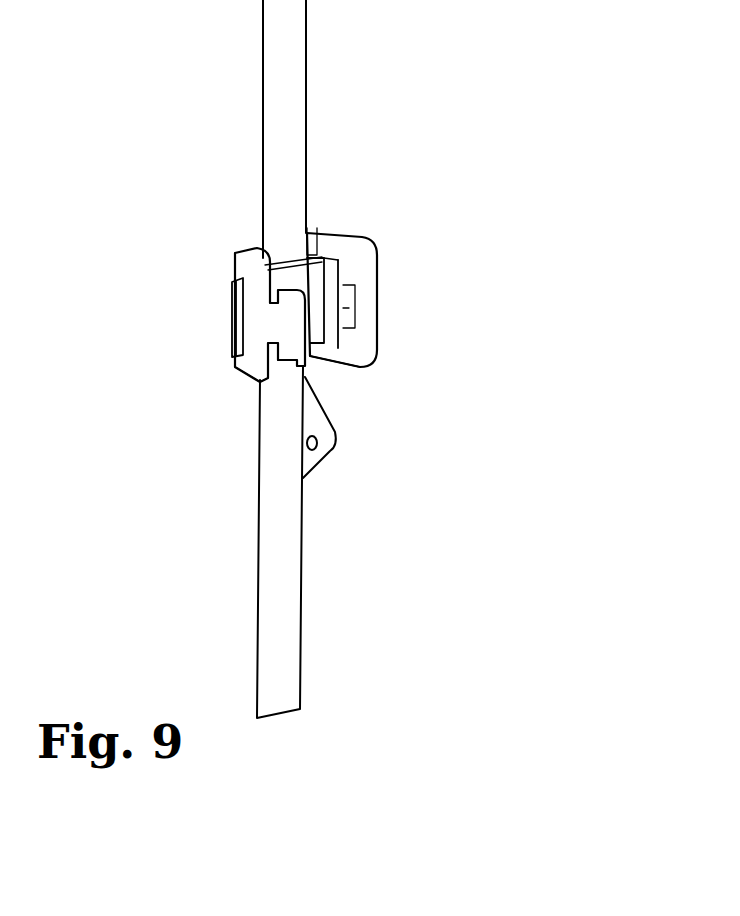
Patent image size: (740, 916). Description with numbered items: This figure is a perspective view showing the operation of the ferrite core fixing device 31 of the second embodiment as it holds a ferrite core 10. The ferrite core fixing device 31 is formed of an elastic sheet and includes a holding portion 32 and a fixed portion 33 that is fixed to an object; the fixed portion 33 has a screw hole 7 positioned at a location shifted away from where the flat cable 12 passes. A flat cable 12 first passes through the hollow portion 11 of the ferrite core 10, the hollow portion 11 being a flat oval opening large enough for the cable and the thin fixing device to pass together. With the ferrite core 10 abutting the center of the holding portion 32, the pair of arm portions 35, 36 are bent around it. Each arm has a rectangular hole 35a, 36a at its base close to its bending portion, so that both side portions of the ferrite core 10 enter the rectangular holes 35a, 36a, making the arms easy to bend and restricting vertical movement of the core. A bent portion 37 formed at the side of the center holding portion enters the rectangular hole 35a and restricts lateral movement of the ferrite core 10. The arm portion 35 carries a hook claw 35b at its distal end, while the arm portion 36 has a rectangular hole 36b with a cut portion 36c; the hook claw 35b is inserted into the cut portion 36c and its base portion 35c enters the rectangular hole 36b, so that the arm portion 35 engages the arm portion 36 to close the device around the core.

The flat cable 12 is at (292, 31).
The hollow portion 11 is at (284, 258).
The holding portion 32 is at (235, 237).
The arm portion 35 is at (237, 268).
The bent portion 37 is at (232, 300).
The rectangular hole 35a is at (262, 334).
The base portion 35c is at (234, 346).
The ferrite core fixing device 31 is at (228, 386).
The hook claw 35b is at (290, 372).
The arm portion 36 is at (345, 238).
The rectangular hole 36a is at (312, 240).
The rectangular hole 36b is at (365, 306).
The cut portion 36c is at (372, 342).
The ferrite core 10 is at (350, 272).
The fixed portion 33 is at (318, 418).
The screw hole 7 is at (317, 447).